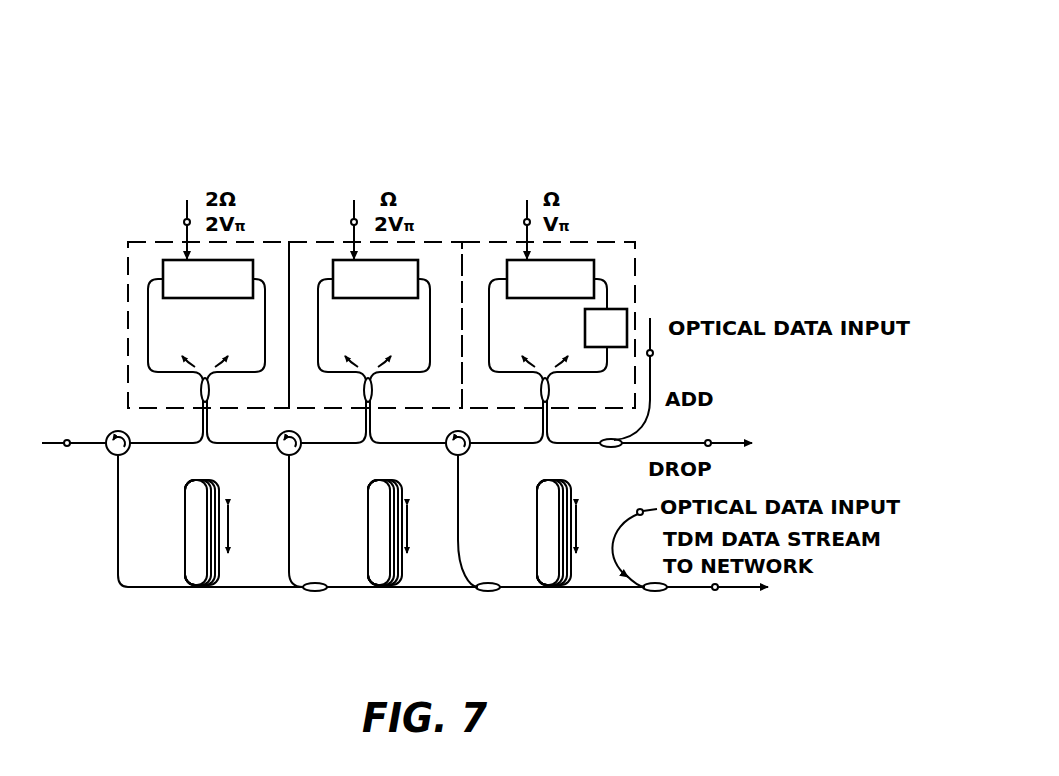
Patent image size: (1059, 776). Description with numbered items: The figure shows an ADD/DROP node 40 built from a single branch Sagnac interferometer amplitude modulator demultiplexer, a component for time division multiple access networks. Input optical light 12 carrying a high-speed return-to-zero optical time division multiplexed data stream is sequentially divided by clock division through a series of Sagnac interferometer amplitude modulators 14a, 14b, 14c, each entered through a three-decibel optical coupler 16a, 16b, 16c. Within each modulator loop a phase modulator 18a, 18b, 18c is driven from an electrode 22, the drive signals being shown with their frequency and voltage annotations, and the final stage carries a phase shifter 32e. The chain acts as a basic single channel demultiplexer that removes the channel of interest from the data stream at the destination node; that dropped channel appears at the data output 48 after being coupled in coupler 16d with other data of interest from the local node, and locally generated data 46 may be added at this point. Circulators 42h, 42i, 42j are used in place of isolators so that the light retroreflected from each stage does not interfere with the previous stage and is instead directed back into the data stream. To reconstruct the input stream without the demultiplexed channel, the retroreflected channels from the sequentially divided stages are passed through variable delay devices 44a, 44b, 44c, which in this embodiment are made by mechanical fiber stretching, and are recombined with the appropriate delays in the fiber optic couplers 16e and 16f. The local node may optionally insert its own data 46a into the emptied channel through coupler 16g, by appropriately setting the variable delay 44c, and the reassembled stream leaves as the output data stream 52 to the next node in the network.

The TDM optical network node / add-drop multiplexer 40 is at (662, 78).
The optical light 12 is at (68, 439).
The Sagnac interferometer amplitude modulator 14a is at (262, 248).
The Sagnac interferometer amplitude modulator 14b is at (430, 248).
The Sagnac interferometer amplitude modulator 14c is at (603, 248).
The modulator drive electrode / RF input 22 is at (184, 222).
The first phase modulator 18a is at (226, 299).
The second phase modulator 18b is at (348, 299).
The third phase modulator 18c is at (513, 299).
The phase shifter 32e is at (628, 316).
The 3 dB optical coupler 16a is at (210, 388).
The 3 dB optical coupler 16b is at (373, 388).
The 3 dB optical coupler 16c is at (550, 388).
The coupler 16d is at (613, 448).
The fiber optic coupler 16e is at (315, 592).
The fiber optic coupler 16f is at (488, 592).
The coupler 16g is at (655, 592).
The inserted data 46 is at (653, 354).
The inserted data 46a is at (638, 511).
The data output 48 is at (711, 440).
The output data stream 52 is at (716, 591).
The circulator 42h is at (127, 451).
The circulator 42i is at (298, 450).
The circulator 42j is at (468, 450).
The variable delay device 44a is at (185, 541).
The variable delay device 44b is at (368, 538).
The variable delay device 44c is at (537, 538).